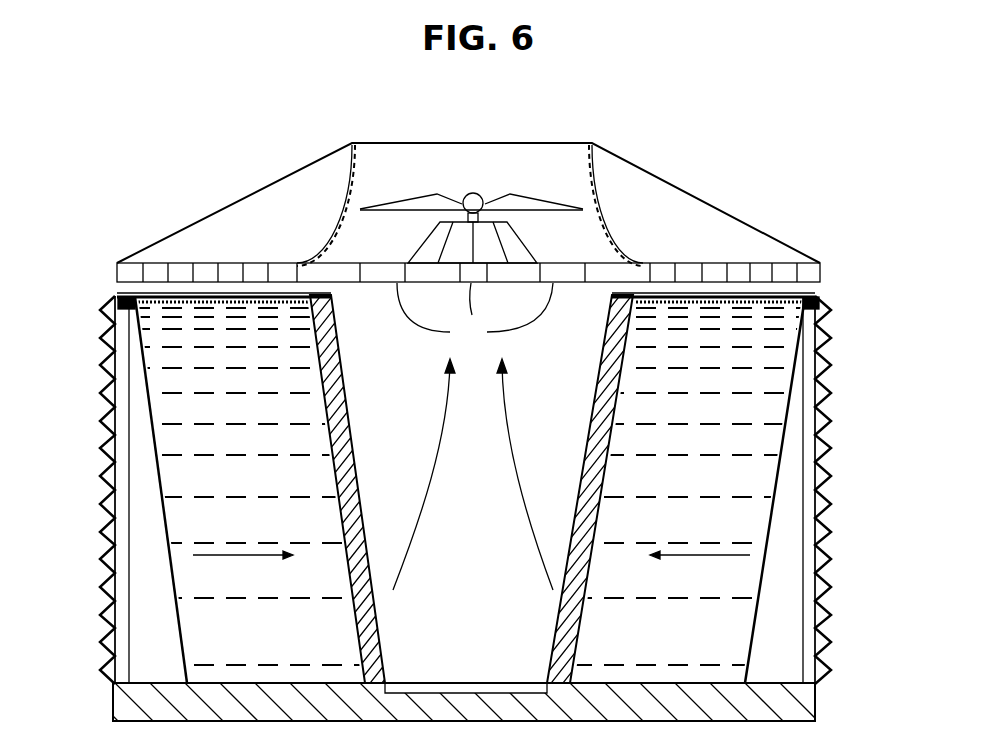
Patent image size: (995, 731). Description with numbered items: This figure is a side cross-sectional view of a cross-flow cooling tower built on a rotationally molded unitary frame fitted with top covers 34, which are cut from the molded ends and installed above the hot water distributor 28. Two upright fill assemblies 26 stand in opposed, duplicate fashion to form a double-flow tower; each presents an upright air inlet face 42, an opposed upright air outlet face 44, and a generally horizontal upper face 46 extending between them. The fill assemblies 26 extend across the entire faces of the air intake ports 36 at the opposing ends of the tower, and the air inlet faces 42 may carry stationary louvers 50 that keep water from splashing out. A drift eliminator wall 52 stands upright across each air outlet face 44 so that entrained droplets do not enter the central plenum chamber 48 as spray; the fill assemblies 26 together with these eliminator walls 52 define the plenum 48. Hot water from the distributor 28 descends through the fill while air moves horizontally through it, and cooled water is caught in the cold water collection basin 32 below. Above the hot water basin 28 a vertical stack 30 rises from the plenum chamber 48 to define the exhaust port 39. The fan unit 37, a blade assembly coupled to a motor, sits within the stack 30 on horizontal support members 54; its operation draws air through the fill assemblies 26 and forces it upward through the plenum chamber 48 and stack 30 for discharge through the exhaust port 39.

The fill assemblies 26 is at (217, 452).
The hot water distributor 28 is at (790, 290).
The vertical stack 30 is at (362, 152).
The cold water collection basin 32 is at (815, 706).
The tower covers 34 is at (295, 172).
The air intake ports 36 is at (85, 468).
The fan unit 37 is at (520, 232).
The exhaust port 39 is at (532, 143).
The air inlet faces 42 is at (143, 387).
The air outlet faces 44 is at (355, 477).
The upper face 46 is at (210, 303).
The central plenum chamber 48 is at (458, 552).
The stationary louvers 50 is at (103, 546).
The drift eliminator wall 52 is at (343, 386).
The horizontal support members 54 is at (471, 271).